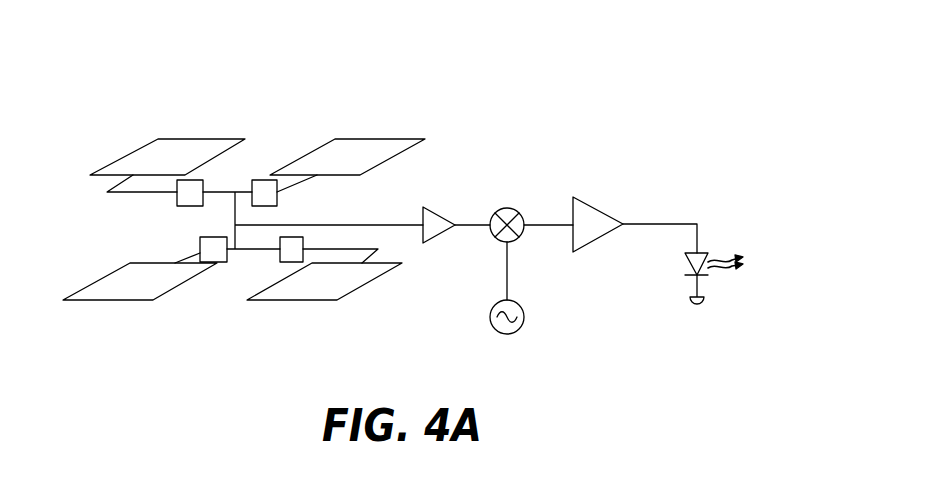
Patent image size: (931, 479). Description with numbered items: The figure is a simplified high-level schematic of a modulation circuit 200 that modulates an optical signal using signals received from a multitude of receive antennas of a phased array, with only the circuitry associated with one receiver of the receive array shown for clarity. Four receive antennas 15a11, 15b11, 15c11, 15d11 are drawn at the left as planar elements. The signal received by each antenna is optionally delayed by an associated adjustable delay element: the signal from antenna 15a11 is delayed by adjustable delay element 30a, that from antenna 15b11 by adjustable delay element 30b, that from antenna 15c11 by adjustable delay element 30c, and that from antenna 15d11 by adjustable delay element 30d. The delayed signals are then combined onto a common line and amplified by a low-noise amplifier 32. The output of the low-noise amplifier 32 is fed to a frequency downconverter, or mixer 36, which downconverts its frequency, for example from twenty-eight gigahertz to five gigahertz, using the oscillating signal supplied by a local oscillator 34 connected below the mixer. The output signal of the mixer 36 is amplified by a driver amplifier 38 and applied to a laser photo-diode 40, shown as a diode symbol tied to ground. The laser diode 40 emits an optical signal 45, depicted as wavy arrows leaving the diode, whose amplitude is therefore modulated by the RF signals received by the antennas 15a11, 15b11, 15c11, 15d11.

The modulation circuit 200 is at (516, 83).
The antenna 15a11 is at (190, 145).
The antenna 15b11 is at (358, 143).
The antenna 15c11 is at (108, 300).
The antenna 15d11 is at (283, 300).
The adjustable delay element 30a is at (177, 197).
The adjustable delay element 30b is at (277, 198).
The adjustable delay element 30c is at (200, 242).
The adjustable delay element 30d is at (280, 255).
The low-noise amplifier 32 is at (442, 212).
The local oscillator 34 is at (525, 318).
The frequency downconverter (mixer) 36 is at (517, 207).
The driver amplifier 38 is at (612, 212).
The laser photo-diode 40 is at (705, 257).
The optical signal 45 is at (743, 258).